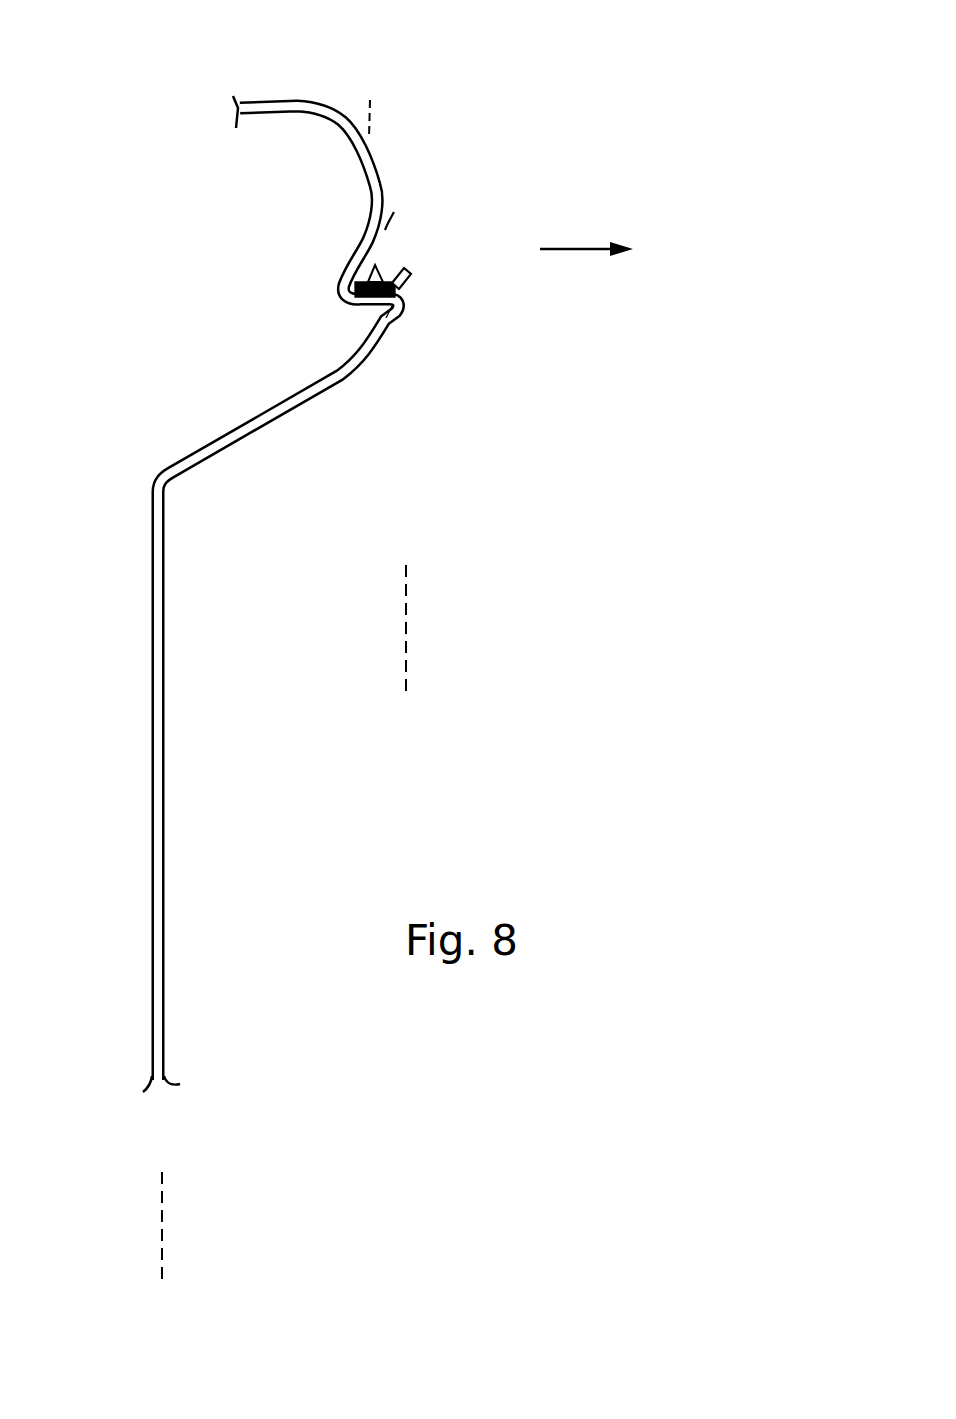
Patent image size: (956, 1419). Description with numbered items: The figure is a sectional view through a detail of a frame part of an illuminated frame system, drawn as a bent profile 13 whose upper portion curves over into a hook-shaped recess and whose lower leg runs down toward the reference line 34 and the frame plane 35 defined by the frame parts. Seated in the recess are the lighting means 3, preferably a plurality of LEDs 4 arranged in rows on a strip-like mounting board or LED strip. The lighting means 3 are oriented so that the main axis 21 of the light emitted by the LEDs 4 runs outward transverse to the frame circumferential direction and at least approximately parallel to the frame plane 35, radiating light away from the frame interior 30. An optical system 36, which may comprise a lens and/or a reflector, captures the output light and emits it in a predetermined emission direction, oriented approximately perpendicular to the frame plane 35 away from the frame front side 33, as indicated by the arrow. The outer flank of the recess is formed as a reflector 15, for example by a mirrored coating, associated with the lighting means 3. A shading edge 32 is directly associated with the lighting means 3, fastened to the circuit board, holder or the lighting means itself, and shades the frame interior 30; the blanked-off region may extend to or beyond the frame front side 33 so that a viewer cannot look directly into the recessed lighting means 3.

The door panel 13 is at (330, 107).
The main axis 21 is at (370, 100).
The reflector 15 is at (385, 230).
The optical system 36 is at (426, 204).
The lighting means 3 is at (394, 255).
The shading edge 32 is at (408, 278).
The frame front side 33 is at (428, 323).
The LEDs 4 is at (345, 281).
The frame interior 30 is at (258, 706).
The reference plane 34 is at (528, 643).
The frame plane 35 is at (162, 1158).